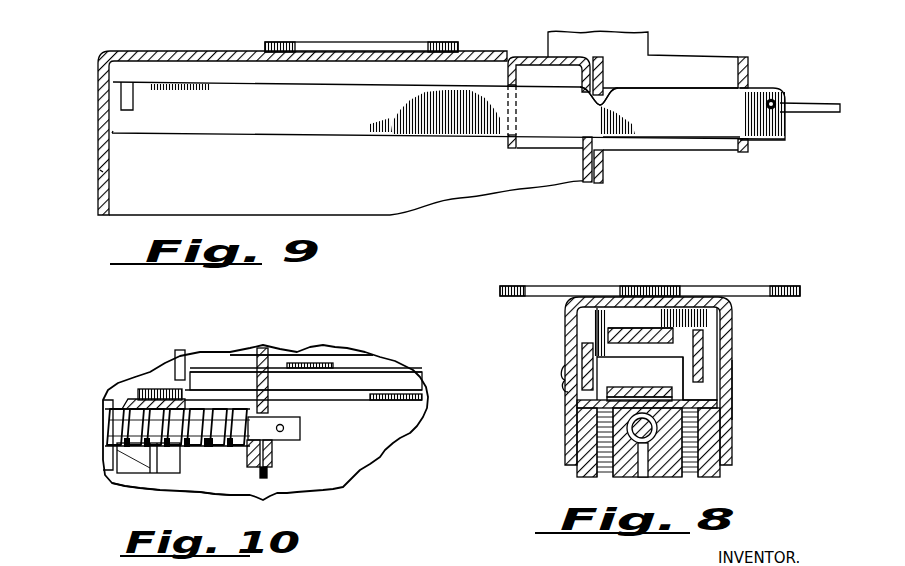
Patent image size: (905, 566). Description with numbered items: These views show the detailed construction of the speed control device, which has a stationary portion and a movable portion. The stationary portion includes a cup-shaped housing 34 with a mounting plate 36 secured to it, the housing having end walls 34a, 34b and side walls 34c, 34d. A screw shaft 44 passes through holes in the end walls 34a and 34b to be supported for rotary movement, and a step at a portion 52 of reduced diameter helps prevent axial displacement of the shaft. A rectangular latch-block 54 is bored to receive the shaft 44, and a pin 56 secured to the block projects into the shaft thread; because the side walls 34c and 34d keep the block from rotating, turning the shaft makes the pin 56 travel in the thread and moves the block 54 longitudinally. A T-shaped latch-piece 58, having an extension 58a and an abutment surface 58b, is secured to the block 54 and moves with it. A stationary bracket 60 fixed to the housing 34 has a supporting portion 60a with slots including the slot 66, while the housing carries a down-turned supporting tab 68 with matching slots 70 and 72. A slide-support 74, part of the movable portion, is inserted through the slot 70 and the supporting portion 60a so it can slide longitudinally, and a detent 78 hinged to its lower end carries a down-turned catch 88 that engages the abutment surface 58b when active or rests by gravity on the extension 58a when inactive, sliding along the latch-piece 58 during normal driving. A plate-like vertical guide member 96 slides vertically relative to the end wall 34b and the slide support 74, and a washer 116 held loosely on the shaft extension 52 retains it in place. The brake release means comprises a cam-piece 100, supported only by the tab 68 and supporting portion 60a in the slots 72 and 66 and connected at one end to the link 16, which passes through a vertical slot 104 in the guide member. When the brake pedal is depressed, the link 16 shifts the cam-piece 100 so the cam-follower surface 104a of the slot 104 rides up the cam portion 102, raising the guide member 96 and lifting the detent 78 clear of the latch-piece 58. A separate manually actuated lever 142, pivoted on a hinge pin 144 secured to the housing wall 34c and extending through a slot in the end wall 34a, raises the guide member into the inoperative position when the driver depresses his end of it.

In FIG. 9, the link 16 is at (830, 113).
In FIG. 9, the cup-shaped housing 34 is at (190, 50).
In FIG. 8, the cup-shaped housing 34 is at (600, 300).
In FIG. 9, the end wall 34a is at (100, 170).
In FIG. 9, the end wall 34b is at (583, 165).
In FIG. 10, the end wall 34b is at (252, 467).
In FIG. 8, the side wall 34c is at (570, 380).
In FIG. 10, the side wall 34d is at (187, 455).
In FIG. 8, the side wall 34d is at (728, 390).
In FIG. 9, the mounting plate 36 is at (365, 42).
In FIG. 8, the mounting plate 36 is at (525, 285).
In FIG. 10, the screw shaft 44 is at (105, 425).
In FIG. 8, the screw shaft 44 is at (628, 445).
In FIG. 10, the portion of reduced diameter 52 is at (300, 428).
In FIG. 10, the latch-block 54 is at (120, 455).
In FIG. 8, the latch-block 54 is at (588, 440).
In FIG. 10, the pin 56 is at (125, 462).
In FIG. 8, the pin 56 is at (646, 462).
In FIG. 10, the T-shaped latch-piece 58 is at (155, 392).
In FIG. 8, the T-shaped latch-piece 58 is at (605, 405).
In FIG. 10, the extension 58a is at (353, 396).
In FIG. 10, the abutment surface 58b is at (135, 400).
In FIG. 9, the stationary bracket 60 is at (705, 62).
In FIG. 9, the supporting portion 60a is at (748, 60).
In FIG. 9, the slot 66 is at (778, 100).
In FIG. 9, the down-turned supporting tab 68 is at (508, 145).
In FIG. 10, the down-turned supporting tab 68 is at (180, 352).
In FIG. 8, the down-turned supporting tab 68 is at (633, 313).
In FIG. 8, the slot 70 is at (652, 333).
In FIG. 9, the slot 72 is at (508, 125).
In FIG. 8, the slot 72 is at (699, 342).
In FIG. 8, the slide-support 74 is at (613, 334).
In FIG. 10, the detent 78 is at (330, 372).
In FIG. 8, the detent 78 is at (630, 392).
In FIG. 10, the catch 88 is at (262, 352).
In FIG. 9, the guide member 96 is at (603, 178).
In FIG. 10, the guide member 96 is at (268, 475).
In FIG. 9, the cam-piece 100 is at (713, 136).
In FIG. 10, the cam-piece 100 is at (290, 360).
In FIG. 8, the cam-piece 100 is at (699, 372).
In FIG. 9, the cam portion 102 is at (595, 85).
In FIG. 9, the vertical slot 104 is at (600, 158).
In FIG. 9, the cam-follower surface 104a is at (605, 100).
In FIG. 10, the washer 116 is at (272, 455).
In FIG. 8, the manually actuated lever 142 is at (588, 360).
In FIG. 8, the hinge pin 144 is at (565, 372).